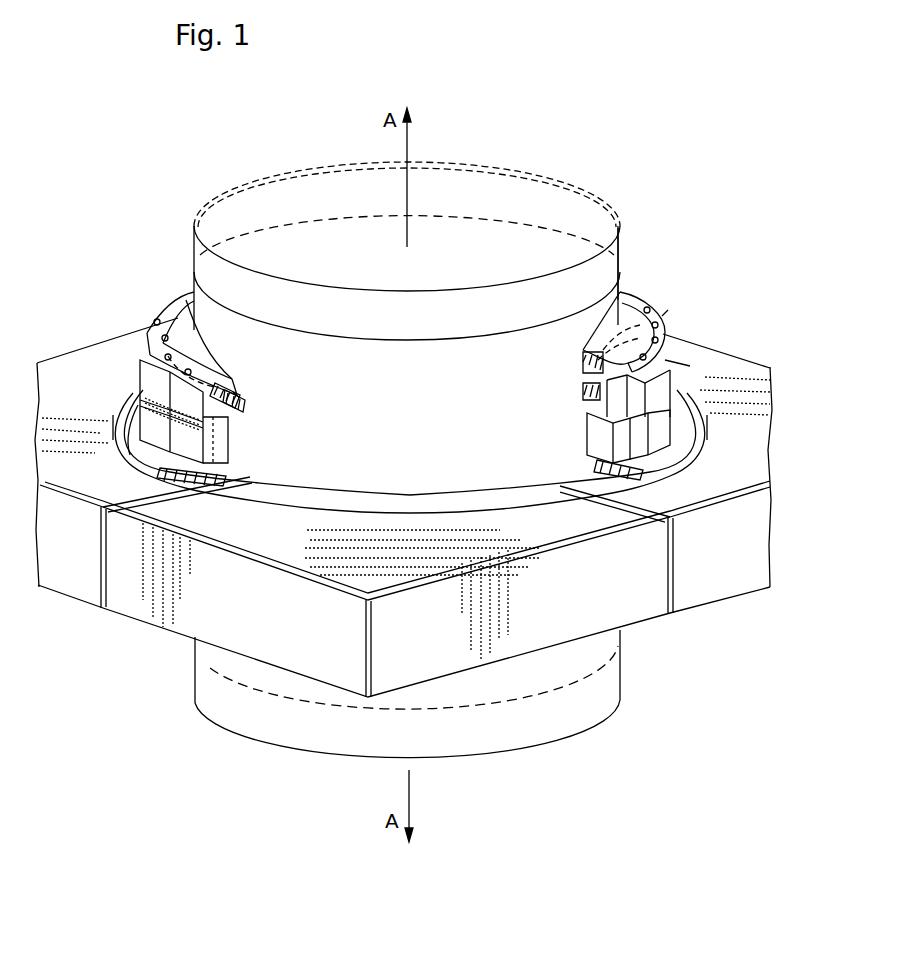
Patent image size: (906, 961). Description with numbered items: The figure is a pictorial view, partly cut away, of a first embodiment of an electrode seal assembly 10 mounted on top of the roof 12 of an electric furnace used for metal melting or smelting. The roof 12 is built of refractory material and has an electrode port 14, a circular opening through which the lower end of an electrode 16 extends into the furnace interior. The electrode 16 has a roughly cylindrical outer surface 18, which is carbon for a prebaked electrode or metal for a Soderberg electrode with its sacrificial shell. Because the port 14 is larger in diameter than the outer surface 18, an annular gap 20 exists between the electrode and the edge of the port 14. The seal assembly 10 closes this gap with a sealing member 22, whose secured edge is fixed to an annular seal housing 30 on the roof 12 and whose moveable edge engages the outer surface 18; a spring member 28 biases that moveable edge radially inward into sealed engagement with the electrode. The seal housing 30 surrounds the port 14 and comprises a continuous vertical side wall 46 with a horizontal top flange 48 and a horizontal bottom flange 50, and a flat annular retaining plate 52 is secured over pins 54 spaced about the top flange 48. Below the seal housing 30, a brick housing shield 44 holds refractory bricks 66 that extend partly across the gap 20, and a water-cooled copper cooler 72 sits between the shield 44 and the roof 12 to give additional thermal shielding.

The electrode seal assembly 10 is at (667, 311).
The roof 12 is at (703, 348).
The electrode port 14 is at (537, 483).
The electrode 16 is at (615, 292).
The outer surface 18 is at (429, 427).
The annular gap 20 is at (334, 486).
The sealing member 22 is at (233, 392).
The spring member 28 is at (232, 403).
The seal housing 30 is at (667, 343).
The brick housing shield 44 is at (177, 435).
The vertical side wall 46 is at (193, 403).
The top flange 48 is at (665, 361).
The bottom flange 50 is at (687, 397).
The retaining plate 52 is at (167, 312).
The pins 54 is at (157, 338).
The refractory bricks 66 is at (595, 434).
The water-cooled copper cooler 72 is at (140, 405).